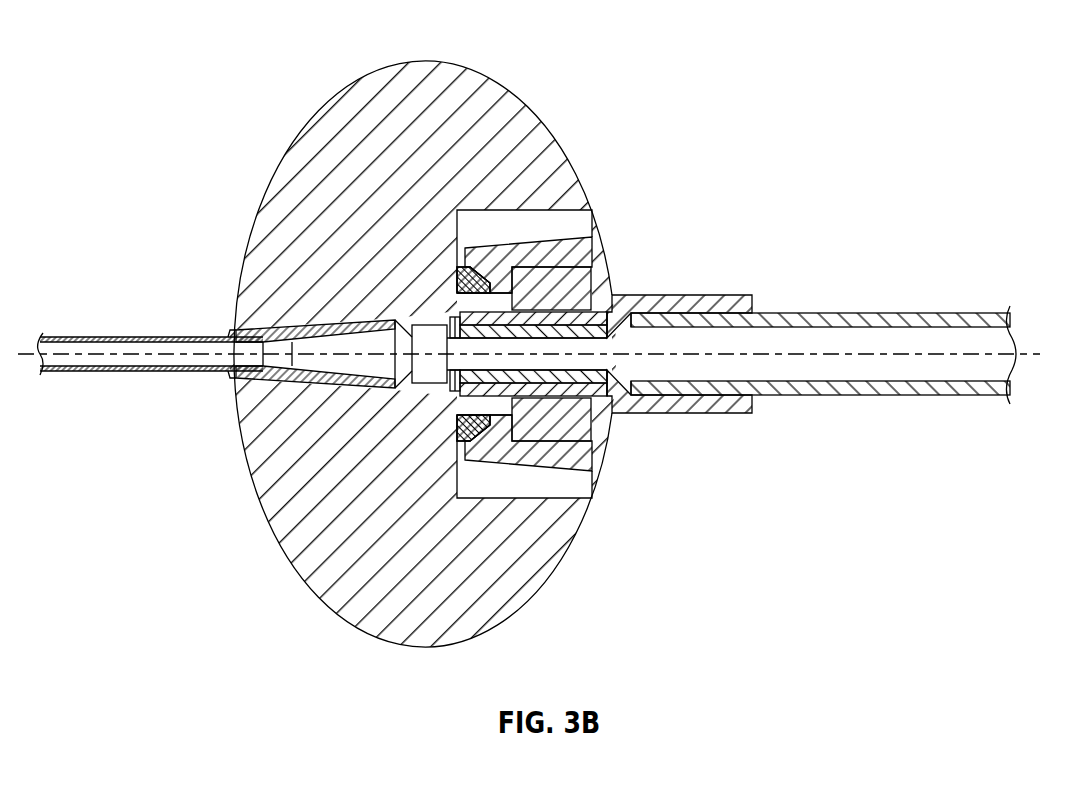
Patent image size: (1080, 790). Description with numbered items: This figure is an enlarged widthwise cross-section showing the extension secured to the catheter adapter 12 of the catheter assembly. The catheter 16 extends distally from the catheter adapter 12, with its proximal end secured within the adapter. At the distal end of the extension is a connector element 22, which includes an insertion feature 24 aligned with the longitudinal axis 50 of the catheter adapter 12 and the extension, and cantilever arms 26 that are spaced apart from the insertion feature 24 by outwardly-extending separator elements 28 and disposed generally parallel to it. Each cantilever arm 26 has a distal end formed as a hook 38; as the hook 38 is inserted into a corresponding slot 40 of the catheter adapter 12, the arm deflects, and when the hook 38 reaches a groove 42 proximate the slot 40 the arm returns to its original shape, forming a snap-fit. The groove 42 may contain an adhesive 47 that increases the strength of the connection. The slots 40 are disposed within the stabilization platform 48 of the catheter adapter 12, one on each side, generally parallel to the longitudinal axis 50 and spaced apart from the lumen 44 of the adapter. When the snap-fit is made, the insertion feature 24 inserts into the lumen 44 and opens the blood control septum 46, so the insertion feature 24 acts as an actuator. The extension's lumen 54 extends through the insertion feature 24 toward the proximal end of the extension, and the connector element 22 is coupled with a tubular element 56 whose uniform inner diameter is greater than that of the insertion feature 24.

The catheter adapter 12 is at (290, 42).
The catheter 16 is at (136, 352).
The connector element 22 is at (574, 364).
The insertion feature 24 is at (452, 392).
The cantilever arms 26 is at (547, 350).
The separator elements 28 is at (611, 292).
The hook 38 is at (482, 268).
The slot 40 is at (470, 216).
The groove 42 is at (452, 312).
The lumen 44 is at (400, 320).
The blood control septum 46 is at (625, 326).
The adhesive 47 is at (456, 269).
The stabilization platform 48 is at (292, 188).
The longitudinal axis 50 is at (852, 362).
The lumen 54 is at (818, 350).
The tubular element 56 is at (866, 396).